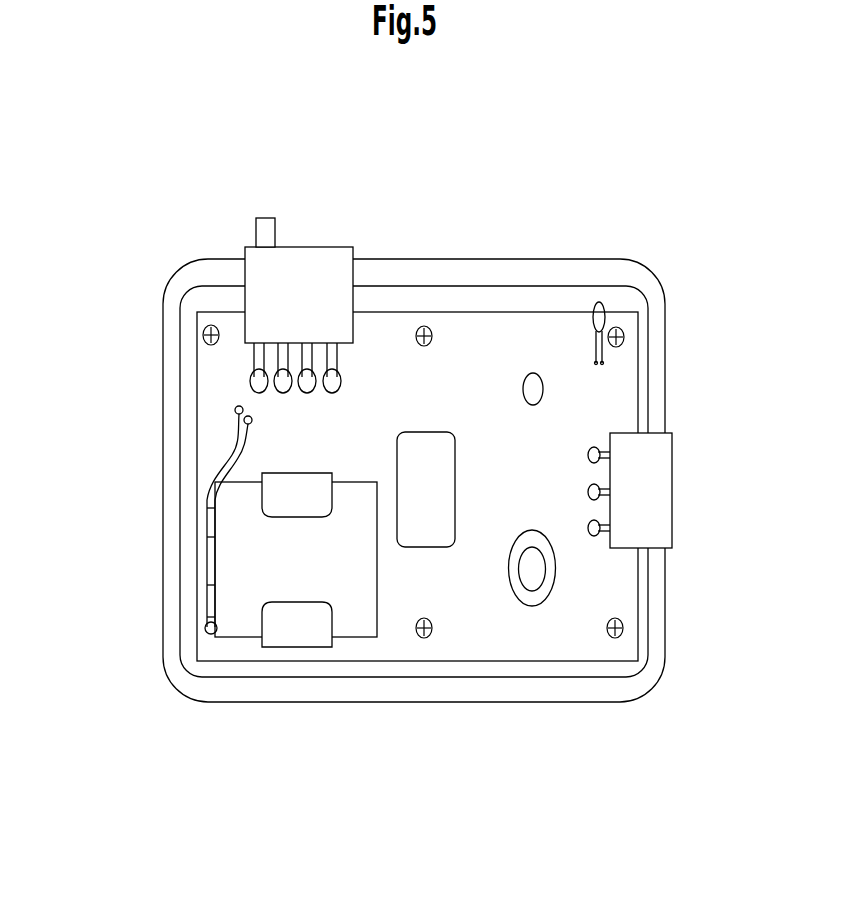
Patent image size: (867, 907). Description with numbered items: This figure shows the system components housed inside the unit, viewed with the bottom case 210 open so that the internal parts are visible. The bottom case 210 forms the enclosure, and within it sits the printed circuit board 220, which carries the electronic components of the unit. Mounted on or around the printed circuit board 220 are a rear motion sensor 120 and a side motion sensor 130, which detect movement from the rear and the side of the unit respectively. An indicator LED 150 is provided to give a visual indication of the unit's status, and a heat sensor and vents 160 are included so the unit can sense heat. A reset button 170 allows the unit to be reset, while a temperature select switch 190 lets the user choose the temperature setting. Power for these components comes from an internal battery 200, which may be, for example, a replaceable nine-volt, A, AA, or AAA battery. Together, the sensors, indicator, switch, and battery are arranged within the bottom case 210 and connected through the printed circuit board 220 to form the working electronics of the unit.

The rear motion sensor 120 is at (482, 621).
The side motion sensor 130 is at (687, 482).
The indicator LED 150 is at (495, 299).
The heat sensor and vents 160 is at (645, 282).
The reset button 170 is at (603, 656).
The temperature select switch 190 is at (275, 256).
The internal battery 200 is at (260, 599).
The bottom case 210 is at (361, 480).
The printed circuit board 220 is at (359, 470).